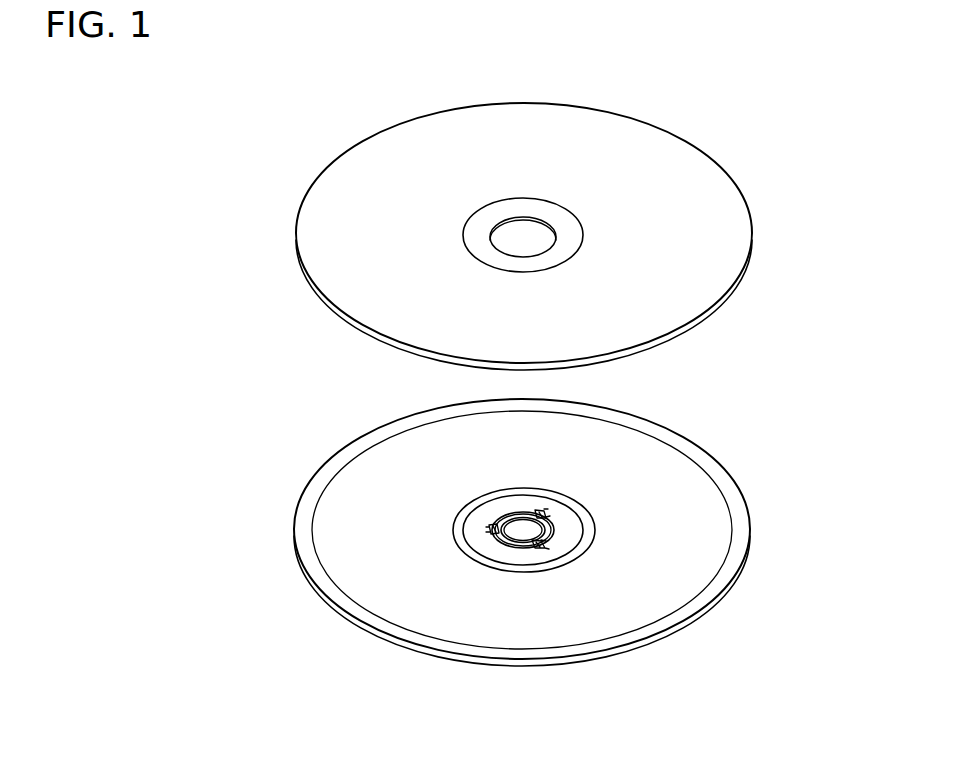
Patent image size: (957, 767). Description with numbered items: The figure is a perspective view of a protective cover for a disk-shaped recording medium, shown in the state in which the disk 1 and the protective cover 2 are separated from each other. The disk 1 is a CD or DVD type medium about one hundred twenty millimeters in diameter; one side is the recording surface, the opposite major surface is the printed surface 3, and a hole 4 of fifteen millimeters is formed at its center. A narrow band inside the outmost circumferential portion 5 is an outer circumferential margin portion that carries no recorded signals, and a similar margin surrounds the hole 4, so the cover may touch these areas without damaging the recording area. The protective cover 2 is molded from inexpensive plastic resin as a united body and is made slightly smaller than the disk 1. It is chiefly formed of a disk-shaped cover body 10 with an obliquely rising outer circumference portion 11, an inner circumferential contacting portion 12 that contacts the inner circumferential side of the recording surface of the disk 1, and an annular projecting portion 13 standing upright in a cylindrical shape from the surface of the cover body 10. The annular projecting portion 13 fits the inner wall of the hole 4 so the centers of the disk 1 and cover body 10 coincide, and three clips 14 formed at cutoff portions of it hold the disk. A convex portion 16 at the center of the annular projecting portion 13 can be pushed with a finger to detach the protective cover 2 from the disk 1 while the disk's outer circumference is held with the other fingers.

The disk 1 is at (550, 223).
The protective cover 2 is at (528, 542).
The printed surface 3 is at (580, 160).
The hole 4 is at (522, 222).
The outmost circumferential portion 5 is at (748, 217).
The cover body 10 is at (693, 482).
The outer circumference portion 11 is at (742, 518).
The inner circumferential contacting portion 12 is at (455, 528).
The annular projecting portion 13 is at (556, 519).
The clips 14 is at (492, 527).
The convex portion 16 is at (523, 528).